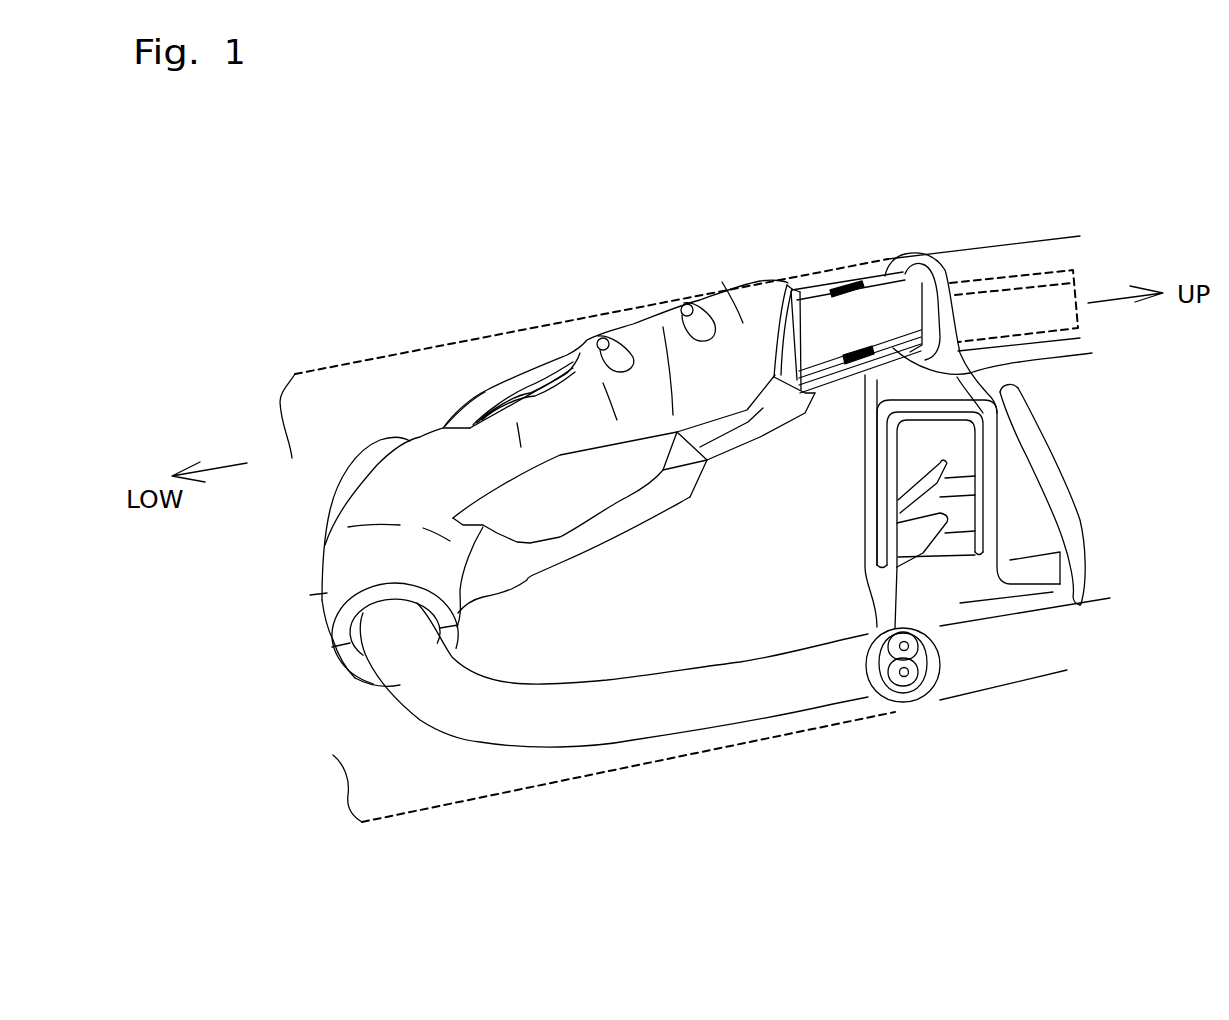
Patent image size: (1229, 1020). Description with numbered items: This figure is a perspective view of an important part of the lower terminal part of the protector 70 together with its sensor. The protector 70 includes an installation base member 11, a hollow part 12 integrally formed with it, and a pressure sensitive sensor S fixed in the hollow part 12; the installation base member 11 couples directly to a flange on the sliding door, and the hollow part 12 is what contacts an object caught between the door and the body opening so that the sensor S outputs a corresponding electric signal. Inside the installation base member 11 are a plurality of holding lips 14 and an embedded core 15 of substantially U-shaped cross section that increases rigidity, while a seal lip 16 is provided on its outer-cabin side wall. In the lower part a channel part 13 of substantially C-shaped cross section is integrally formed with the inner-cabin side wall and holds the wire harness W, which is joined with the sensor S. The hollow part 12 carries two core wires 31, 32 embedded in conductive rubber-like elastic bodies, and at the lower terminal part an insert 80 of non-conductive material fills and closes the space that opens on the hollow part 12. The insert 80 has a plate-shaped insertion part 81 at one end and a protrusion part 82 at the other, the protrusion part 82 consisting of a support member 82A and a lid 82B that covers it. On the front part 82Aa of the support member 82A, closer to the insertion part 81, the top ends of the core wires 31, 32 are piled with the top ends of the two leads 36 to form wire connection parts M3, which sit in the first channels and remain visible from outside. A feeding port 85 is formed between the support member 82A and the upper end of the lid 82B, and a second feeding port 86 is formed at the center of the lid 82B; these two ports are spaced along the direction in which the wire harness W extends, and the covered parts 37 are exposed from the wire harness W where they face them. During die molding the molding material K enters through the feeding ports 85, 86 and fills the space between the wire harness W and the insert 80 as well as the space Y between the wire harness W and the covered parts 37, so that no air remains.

The installation base member 11 is at (868, 472).
The hollow part 12 is at (988, 264).
The channel part 13 is at (920, 700).
The holding lips 14 is at (903, 513).
The core 15 is at (985, 452).
The seal lip 16 is at (1045, 458).
The core wire 31 is at (873, 282).
The core wire 32 is at (1005, 353).
The lead 36 is at (823, 288).
The covered part 37 is at (483, 401).
The protector 70 is at (847, 205).
The insert 80 is at (308, 479).
The insertion part 81 is at (1040, 277).
The protrusion part 82 is at (302, 742).
The support member 82A is at (337, 663).
The lid 82B is at (313, 600).
The front part 82Aa is at (787, 333).
The feeding port 85 is at (803, 313).
The feeding port 86 is at (537, 390).
The molding material K is at (467, 805).
The pressure sensitive sensor S is at (1060, 248).
The wire harness W is at (990, 617).
The space Y is at (497, 405).
The wire connection part M3 is at (843, 290).